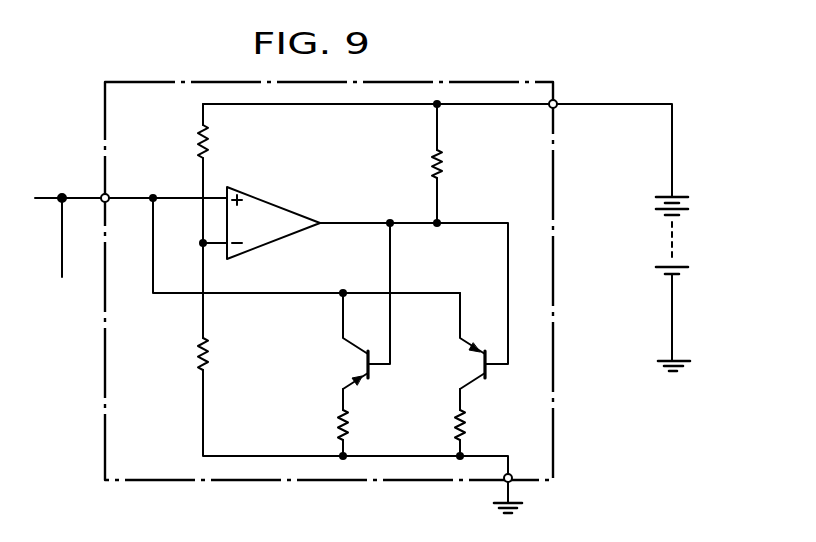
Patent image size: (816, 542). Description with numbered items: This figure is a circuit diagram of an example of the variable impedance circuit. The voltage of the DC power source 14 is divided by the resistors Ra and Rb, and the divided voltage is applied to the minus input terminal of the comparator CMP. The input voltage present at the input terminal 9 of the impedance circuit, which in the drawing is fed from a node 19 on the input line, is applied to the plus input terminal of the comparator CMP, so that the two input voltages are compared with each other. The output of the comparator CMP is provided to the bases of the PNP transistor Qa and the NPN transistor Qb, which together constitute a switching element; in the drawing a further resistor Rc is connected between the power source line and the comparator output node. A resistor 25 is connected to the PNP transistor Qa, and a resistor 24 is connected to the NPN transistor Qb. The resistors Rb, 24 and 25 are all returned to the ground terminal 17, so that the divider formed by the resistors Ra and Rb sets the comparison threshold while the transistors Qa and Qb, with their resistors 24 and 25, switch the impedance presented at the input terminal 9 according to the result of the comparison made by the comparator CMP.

The input terminal 9 is at (103, 195).
The input node 19 is at (61, 196).
The DC power source 14 is at (663, 196).
The ground terminal 17 is at (511, 482).
The resistor 24 is at (359, 422).
The resistor 25 is at (476, 422).
The comparator CMP is at (287, 204).
The resistor Ra is at (219, 143).
The resistor Rb is at (219, 354).
The resistor Rc is at (452, 164).
The PNP transistor Qa is at (461, 341).
The NPN transistor Qb is at (339, 341).